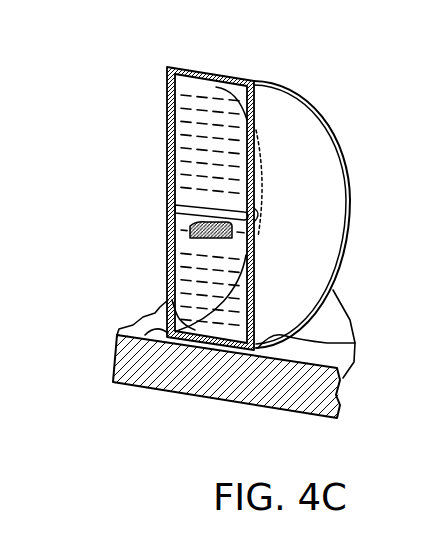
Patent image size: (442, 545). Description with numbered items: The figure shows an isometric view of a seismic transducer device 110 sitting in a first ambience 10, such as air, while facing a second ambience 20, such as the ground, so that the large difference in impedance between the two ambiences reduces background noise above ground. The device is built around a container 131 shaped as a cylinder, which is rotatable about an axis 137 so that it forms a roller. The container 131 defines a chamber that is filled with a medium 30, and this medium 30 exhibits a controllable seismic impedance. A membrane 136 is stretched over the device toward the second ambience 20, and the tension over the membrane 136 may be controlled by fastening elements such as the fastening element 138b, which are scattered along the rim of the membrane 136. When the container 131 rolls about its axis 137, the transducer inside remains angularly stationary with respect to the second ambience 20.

The seismic transducer device 110 is at (313, 64).
The first ambience 10 is at (102, 120).
The medium 30 is at (218, 170).
The container 131 is at (167, 160).
The axis 137 is at (172, 208).
The membrane 136 is at (168, 303).
The fastening element 138b is at (117, 346).
The second ambience 20 is at (268, 405).